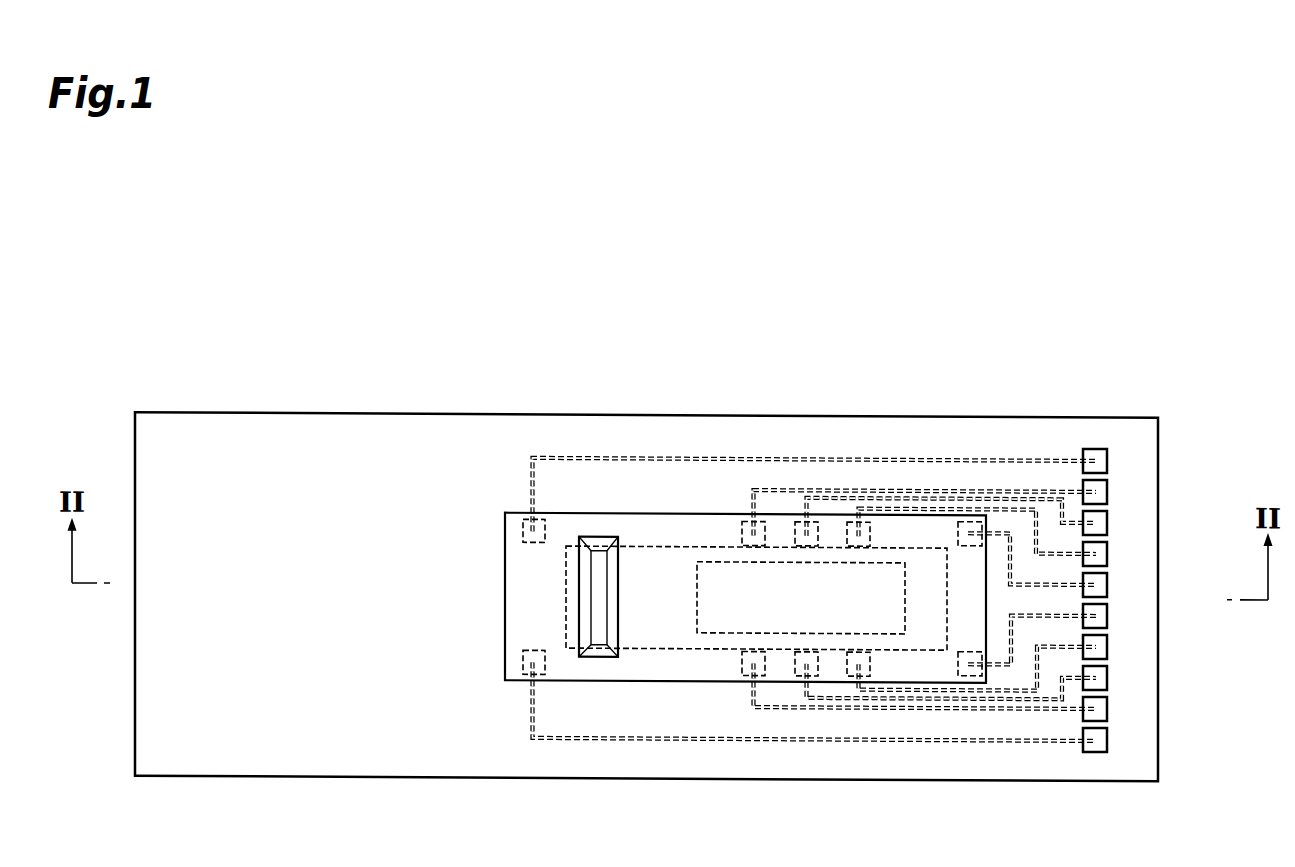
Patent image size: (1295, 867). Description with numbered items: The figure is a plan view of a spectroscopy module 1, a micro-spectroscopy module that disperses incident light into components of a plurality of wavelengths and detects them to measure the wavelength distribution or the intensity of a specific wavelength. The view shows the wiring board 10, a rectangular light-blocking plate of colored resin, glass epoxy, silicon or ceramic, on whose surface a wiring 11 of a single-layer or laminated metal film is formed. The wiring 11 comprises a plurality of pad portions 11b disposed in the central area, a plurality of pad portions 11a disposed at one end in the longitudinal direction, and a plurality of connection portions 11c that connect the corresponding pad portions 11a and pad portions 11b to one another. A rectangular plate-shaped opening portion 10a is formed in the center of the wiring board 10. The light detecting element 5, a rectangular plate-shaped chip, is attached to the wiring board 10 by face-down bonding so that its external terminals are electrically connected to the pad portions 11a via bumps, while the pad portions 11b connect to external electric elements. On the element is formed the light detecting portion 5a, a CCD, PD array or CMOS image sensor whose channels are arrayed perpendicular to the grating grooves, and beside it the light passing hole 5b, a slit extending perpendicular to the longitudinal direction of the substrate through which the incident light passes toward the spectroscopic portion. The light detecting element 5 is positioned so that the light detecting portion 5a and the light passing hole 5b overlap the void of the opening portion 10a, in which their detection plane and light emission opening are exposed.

The spectroscopy module 1 is at (205, 261).
The wiring board 10 is at (412, 405).
The opening portion 10a is at (676, 552).
The wiring 11 is at (1013, 444).
The pad portions 11a is at (1108, 458).
The pad portions 11b is at (522, 669).
The connection portions 11c is at (1003, 506).
The light detecting element 5 is at (494, 559).
The light detecting portion 5a is at (697, 603).
The light passing hole 5b is at (600, 657).